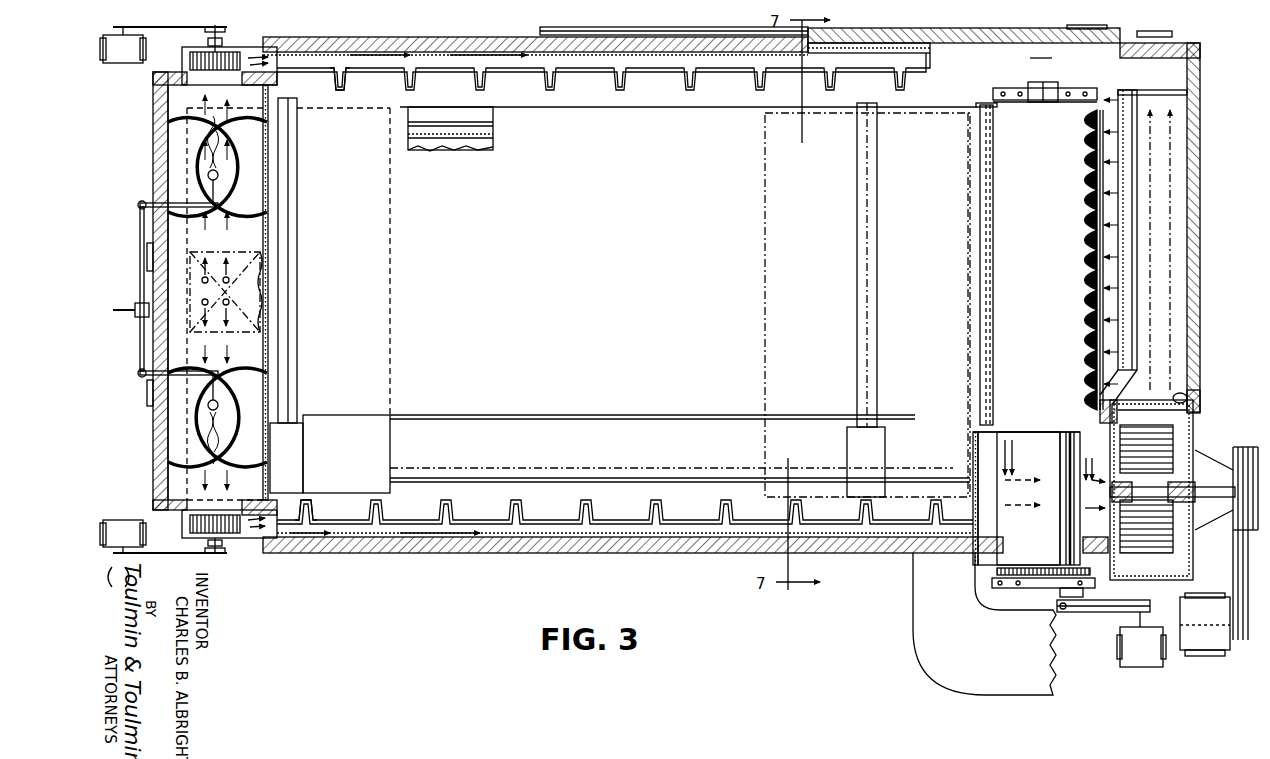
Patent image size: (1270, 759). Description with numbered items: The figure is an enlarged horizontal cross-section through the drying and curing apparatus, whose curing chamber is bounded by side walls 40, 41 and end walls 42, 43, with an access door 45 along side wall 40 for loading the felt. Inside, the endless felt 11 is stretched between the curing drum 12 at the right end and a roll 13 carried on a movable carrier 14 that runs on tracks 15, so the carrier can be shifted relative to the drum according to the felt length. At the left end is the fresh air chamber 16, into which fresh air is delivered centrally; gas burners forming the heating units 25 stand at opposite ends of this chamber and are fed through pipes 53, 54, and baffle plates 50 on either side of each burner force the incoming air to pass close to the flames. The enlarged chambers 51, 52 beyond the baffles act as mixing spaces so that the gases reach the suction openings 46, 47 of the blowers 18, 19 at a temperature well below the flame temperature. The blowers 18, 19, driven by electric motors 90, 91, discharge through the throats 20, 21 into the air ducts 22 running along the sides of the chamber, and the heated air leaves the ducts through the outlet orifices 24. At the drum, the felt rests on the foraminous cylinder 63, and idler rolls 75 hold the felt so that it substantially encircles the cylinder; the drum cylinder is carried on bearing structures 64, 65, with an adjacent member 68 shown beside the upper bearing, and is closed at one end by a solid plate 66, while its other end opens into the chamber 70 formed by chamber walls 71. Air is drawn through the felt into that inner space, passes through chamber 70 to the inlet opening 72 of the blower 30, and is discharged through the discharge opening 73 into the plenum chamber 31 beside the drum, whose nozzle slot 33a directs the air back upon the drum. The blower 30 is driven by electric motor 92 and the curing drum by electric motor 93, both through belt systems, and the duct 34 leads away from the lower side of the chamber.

The felt 11 is at (682, 107).
The curing drum 12 is at (1020, 118).
The roll 13 is at (297, 386).
The movable carrier 14 is at (392, 446).
The tracks 15 is at (462, 122).
The fresh air chamber 16 is at (266, 278).
The blower 18 is at (236, 72).
The blower 19 is at (200, 533).
The discharge throat 20 is at (279, 46).
The discharge throat 21 is at (272, 541).
The air ducts 22 is at (590, 53).
The outlet orifices 24 is at (346, 88).
The heating units 25 is at (220, 174).
The blower 30 is at (1175, 545).
The plenum chamber 31 is at (1190, 108).
The slot 33a is at (1130, 177).
The exhaust duct 34 is at (940, 660).
The side wall 40 is at (473, 37).
The side wall 41 is at (416, 553).
The end wall 42 is at (156, 176).
The end wall 43 is at (1200, 152).
The access door 45 is at (1043, 44).
The suction opening 46 is at (195, 68).
The suction opening 47 is at (190, 519).
The baffle plates 50 is at (178, 142).
The chamber 51 is at (180, 100).
The chamber 52 is at (190, 481).
The pipe 53 is at (140, 262).
The pipe 54 is at (140, 320).
The foraminous cylinder 63 is at (985, 262).
The bearing structure 64 is at (1046, 82).
The bearing structure 65 is at (1032, 588).
The solid plate 66 is at (1033, 446).
The rack 68 is at (1076, 96).
The chamber 70 is at (975, 470).
The chamber walls 71 is at (973, 438).
The inlet opening 72 is at (1112, 518).
The discharge opening 73 is at (1182, 400).
The idler rolls 75 is at (968, 162).
The electric motor 90 is at (113, 62).
The electric motor 91 is at (118, 521).
The electric motor 92 is at (1205, 640).
The electric motor 93 is at (1135, 650).